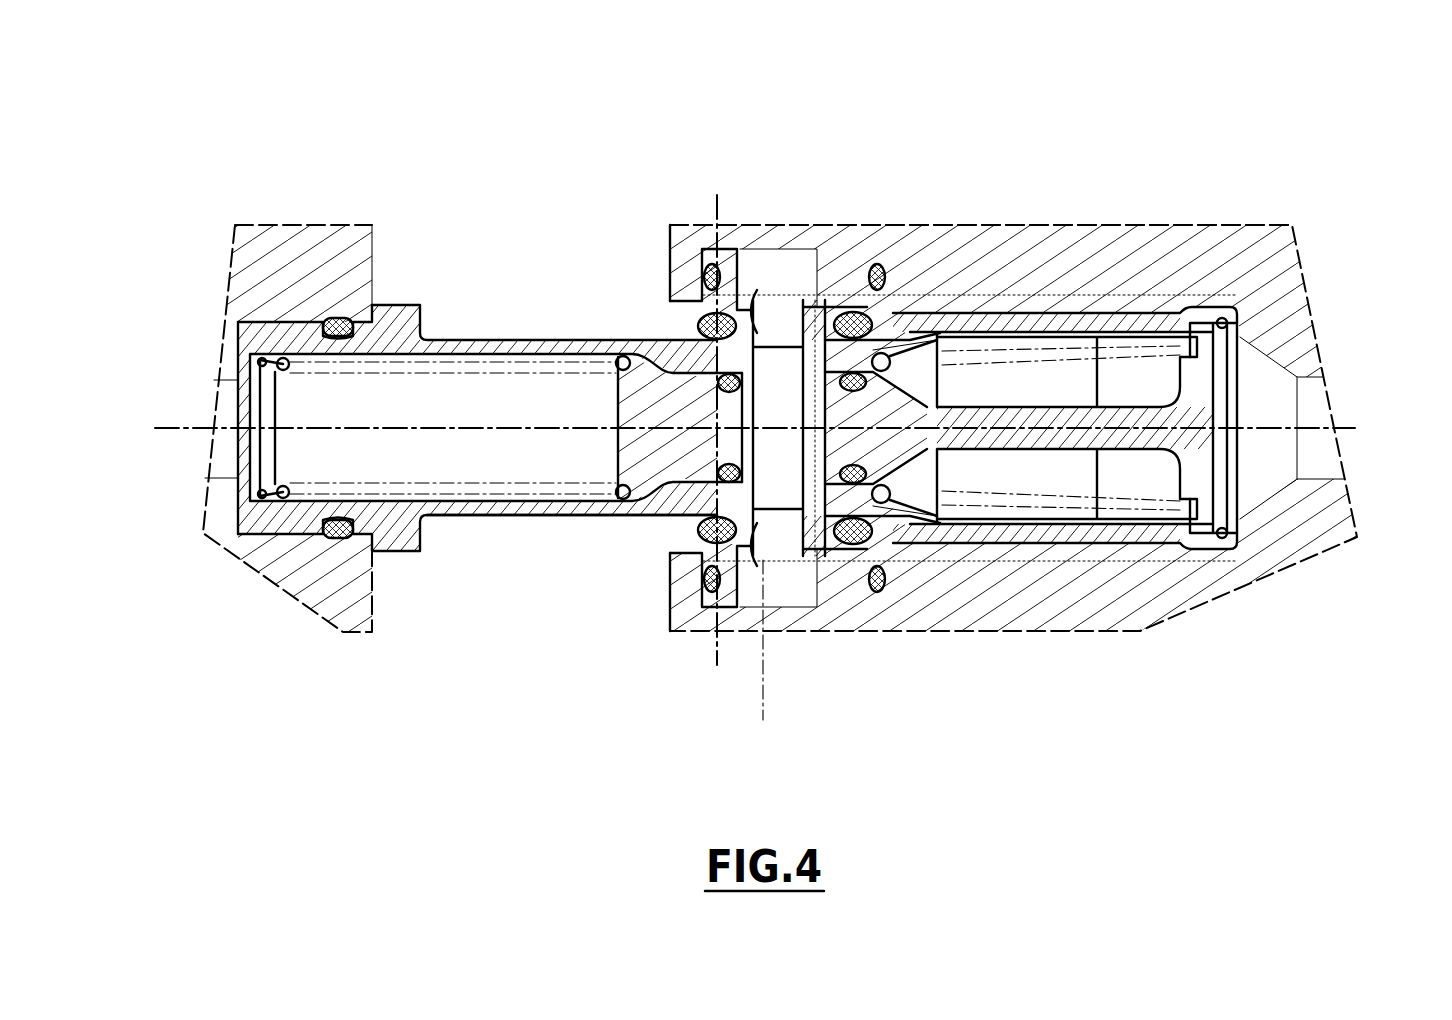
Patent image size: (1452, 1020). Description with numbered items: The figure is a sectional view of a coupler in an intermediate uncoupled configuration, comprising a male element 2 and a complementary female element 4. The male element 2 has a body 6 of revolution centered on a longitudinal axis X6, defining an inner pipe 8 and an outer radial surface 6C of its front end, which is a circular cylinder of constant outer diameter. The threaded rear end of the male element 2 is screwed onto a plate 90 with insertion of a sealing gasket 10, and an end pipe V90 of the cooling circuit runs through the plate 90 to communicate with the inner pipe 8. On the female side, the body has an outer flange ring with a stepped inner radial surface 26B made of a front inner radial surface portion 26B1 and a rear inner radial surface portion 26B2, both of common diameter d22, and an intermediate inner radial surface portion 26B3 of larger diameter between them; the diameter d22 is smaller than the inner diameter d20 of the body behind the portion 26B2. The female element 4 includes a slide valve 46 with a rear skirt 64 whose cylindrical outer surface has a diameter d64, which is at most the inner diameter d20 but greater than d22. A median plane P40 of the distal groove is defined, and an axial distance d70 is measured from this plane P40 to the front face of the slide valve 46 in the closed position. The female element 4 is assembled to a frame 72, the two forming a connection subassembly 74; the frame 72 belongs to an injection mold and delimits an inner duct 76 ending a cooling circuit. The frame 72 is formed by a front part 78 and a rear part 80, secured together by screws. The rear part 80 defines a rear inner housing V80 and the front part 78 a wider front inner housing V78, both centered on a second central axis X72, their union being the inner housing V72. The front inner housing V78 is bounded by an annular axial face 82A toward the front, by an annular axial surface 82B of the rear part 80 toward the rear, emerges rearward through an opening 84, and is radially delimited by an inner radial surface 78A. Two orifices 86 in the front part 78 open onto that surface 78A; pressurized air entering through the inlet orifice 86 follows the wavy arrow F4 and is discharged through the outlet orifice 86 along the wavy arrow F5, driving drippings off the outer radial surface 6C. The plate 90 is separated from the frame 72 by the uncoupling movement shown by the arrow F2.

The male element 2 is at (242, 515).
The female element 4 is at (460, 170).
The body 6 is at (507, 508).
The outer radial surface 6C is at (562, 520).
The inner pipe 8 is at (362, 407).
The sealing gasket 10 is at (337, 538).
The stepped inner radial surface 26B is at (538, 850).
The front inner radial surface portion 26B1 is at (688, 350).
The rear inner radial surface portion 26B2 is at (918, 452).
The intermediate inner radial surface portion 26B3 is at (780, 322).
The slide valve 46 is at (923, 526).
The rear skirt 64 is at (955, 542).
The frame 72 is at (1223, 743).
The connection subassembly 74 is at (1270, 740).
The inner duct 76 is at (1312, 456).
The front part 78 is at (870, 600).
The inner radial surface 78A is at (855, 290).
The rear part 80 is at (1108, 596).
The annular axial face 82A is at (722, 244).
The annular axial surface 82B is at (872, 238).
The opening 84 is at (655, 298).
The orifices 86 is at (803, 213).
The plate 90 is at (348, 613).
The longitudinal axis X6 is at (297, 414).
The second central axis X72 is at (1383, 419).
The inner housing V72 is at (1233, 77).
The front inner housing V78 is at (902, 292).
The rear inner housing V80 is at (1037, 300).
The end pipe V90 is at (218, 465).
The median plane P40 is at (697, 416).
The arrow F2 is at (520, 285).
The wavy arrow F4 is at (768, 340).
The wavy arrow F5 is at (777, 535).
The inner diameter d20 is at (1060, 517).
The diameter d22 is at (783, 349).
The diameter d64 is at (978, 342).
The axial distance d70 is at (717, 668).